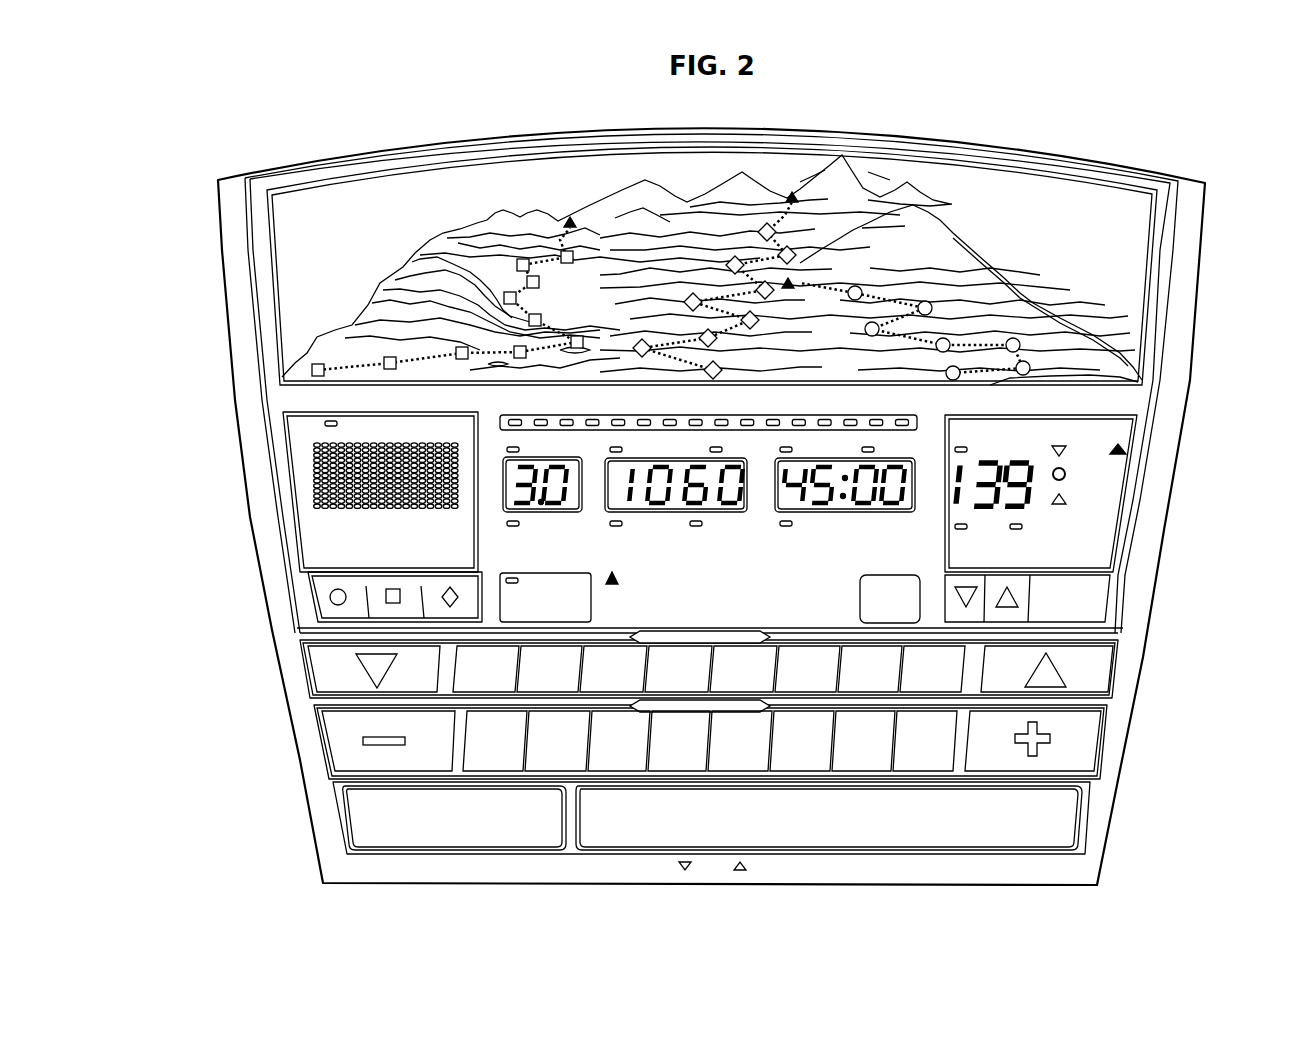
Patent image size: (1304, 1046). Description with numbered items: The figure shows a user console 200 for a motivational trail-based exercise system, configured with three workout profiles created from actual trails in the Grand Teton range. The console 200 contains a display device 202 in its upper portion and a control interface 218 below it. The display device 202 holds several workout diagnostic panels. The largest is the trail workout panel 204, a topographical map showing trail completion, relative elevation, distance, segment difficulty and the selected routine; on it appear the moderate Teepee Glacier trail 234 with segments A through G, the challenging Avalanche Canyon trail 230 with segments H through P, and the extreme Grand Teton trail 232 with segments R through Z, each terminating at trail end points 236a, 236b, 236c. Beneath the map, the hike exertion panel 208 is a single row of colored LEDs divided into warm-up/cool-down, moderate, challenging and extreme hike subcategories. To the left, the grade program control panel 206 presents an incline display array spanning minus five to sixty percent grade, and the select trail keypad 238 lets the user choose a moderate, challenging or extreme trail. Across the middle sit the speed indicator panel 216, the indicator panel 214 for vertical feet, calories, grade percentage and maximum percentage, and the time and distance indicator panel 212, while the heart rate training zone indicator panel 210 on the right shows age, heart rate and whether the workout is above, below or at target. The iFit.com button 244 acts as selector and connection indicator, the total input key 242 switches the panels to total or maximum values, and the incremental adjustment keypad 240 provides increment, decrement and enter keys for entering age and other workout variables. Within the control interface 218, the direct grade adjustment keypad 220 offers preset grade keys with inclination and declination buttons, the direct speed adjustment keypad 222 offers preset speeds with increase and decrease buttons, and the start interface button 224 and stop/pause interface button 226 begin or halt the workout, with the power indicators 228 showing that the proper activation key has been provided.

The user console 200 is at (1187, 565).
The display device 202 is at (287, 635).
The trail workout panel 204 is at (1093, 190).
The grade program control panel 206 is at (320, 538).
The hike exertion panel 208 is at (908, 424).
The heart rate training zone indicator panel 210 is at (1142, 417).
The time and distance indicator panel 212 is at (775, 524).
The indicator panel 214 is at (605, 524).
The speed indicator panel 216 is at (592, 524).
The control interface 218 is at (1143, 640).
The direct grade adjustment keypad 220 is at (302, 660).
The direct speed adjustment keypad 222 is at (318, 740).
The start interface button 224 is at (338, 828).
The stop/pause interface button 226 is at (925, 827).
The power indicators 228 is at (672, 873).
The Avalanche Canyon trail 230 is at (352, 338).
The Grand Teton trail 232 is at (745, 362).
The Teepee Glacier trail 234 is at (918, 368).
The trail end point 236a is at (570, 222).
The trail end point 236b is at (792, 196).
The trail end point 236c is at (859, 268).
The select trail keypad 238 is at (315, 596).
The incremental adjustment keypad 240 is at (1097, 610).
The total input key 242 is at (882, 580).
The iFit.com button 244 is at (568, 583).